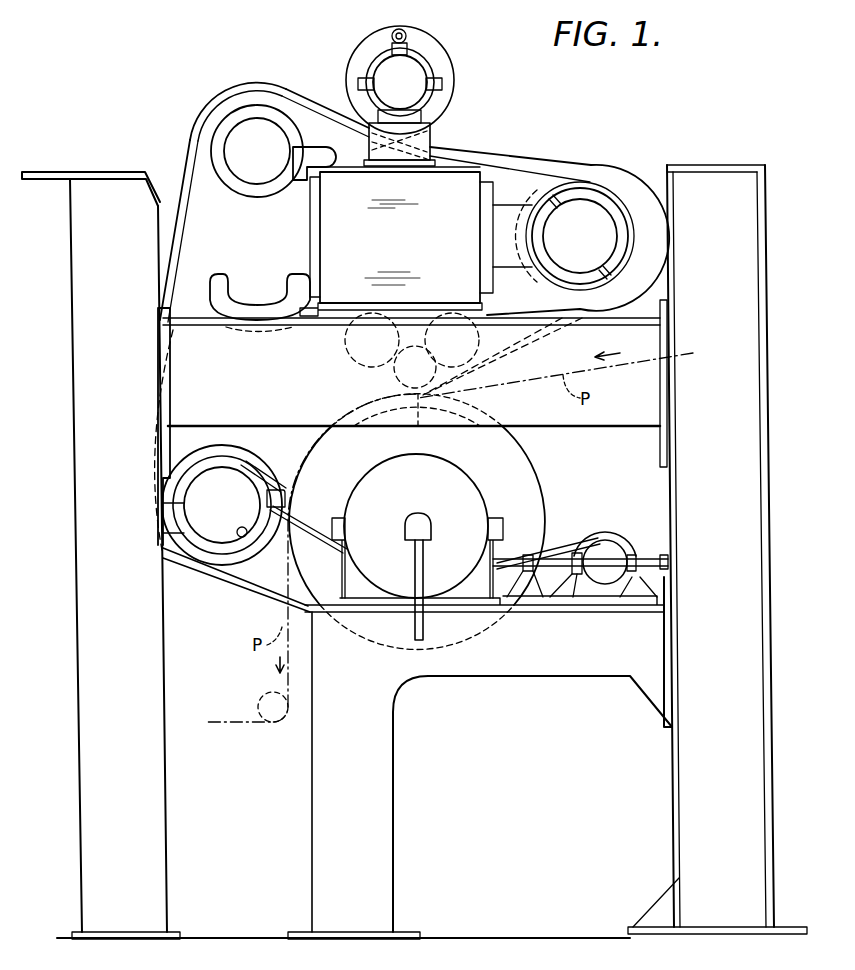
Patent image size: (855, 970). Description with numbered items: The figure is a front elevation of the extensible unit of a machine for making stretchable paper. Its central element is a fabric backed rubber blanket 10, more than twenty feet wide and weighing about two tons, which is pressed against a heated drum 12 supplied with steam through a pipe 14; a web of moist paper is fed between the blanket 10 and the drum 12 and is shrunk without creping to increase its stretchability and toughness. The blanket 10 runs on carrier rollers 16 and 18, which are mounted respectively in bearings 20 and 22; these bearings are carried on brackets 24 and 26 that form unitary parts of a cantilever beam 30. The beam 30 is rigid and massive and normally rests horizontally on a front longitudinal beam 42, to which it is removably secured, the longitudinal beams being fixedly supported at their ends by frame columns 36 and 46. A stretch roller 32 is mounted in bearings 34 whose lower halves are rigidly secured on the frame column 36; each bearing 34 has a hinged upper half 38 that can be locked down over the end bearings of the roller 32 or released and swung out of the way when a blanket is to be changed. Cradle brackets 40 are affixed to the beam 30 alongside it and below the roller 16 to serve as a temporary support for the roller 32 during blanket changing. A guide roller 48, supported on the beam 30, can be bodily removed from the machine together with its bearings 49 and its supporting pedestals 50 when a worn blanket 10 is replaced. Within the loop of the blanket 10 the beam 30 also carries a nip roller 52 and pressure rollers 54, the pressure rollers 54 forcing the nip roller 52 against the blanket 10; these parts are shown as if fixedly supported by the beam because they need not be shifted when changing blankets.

The fabric backed rubber blanket 10 is at (316, 107).
The heated drum 12 is at (520, 480).
The pipe 14 is at (423, 570).
The carrier roller 16 is at (253, 100).
The carrier roller 18 is at (603, 188).
The bearing 20 is at (217, 140).
The bearing 22 is at (617, 217).
The bracket 24 is at (302, 162).
The bracket 26 is at (508, 213).
The cantilever beam 30 is at (412, 247).
The stretch roller 32 is at (230, 450).
The bearing 34 is at (260, 565).
The frame column 36 is at (100, 190).
The hinged upper half 38 is at (157, 463).
The cradle bracket 40 is at (217, 303).
The front longitudinal beam 42 is at (648, 393).
The frame column 46 is at (725, 185).
The guide roller 48 is at (430, 54).
The bearing 49 is at (437, 73).
The supporting pedestal 50 is at (433, 137).
The nip roller 52 is at (418, 422).
The pressure roller 54 is at (347, 350).